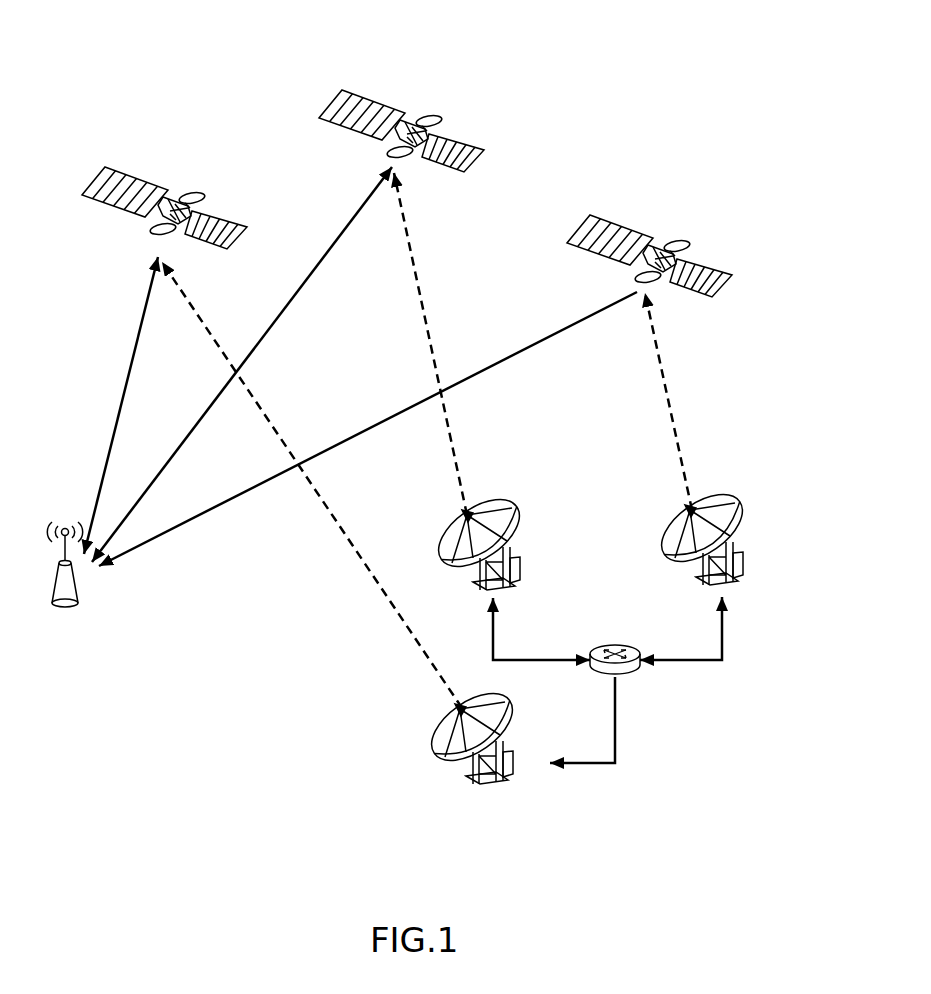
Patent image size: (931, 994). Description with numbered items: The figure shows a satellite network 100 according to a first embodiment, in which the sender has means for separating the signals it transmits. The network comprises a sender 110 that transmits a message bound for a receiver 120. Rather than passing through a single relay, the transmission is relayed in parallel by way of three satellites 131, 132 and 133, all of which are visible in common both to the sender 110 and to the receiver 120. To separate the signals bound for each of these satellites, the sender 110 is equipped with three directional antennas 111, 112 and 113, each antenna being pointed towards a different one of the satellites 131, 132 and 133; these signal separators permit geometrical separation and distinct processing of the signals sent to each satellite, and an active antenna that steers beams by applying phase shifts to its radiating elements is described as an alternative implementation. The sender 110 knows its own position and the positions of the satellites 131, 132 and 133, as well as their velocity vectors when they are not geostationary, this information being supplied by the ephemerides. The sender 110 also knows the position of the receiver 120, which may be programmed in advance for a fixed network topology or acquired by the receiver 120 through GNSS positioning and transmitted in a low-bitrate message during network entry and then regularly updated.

The satellite network 100 is at (608, 100).
The sender 110 is at (632, 682).
The directional antenna 111 is at (502, 792).
The directional antenna 112 is at (518, 497).
The directional antenna 113 is at (740, 492).
The receiver 120 is at (78, 607).
The satellite 131 is at (185, 187).
The satellite 132 is at (435, 117).
The satellite 133 is at (677, 240).